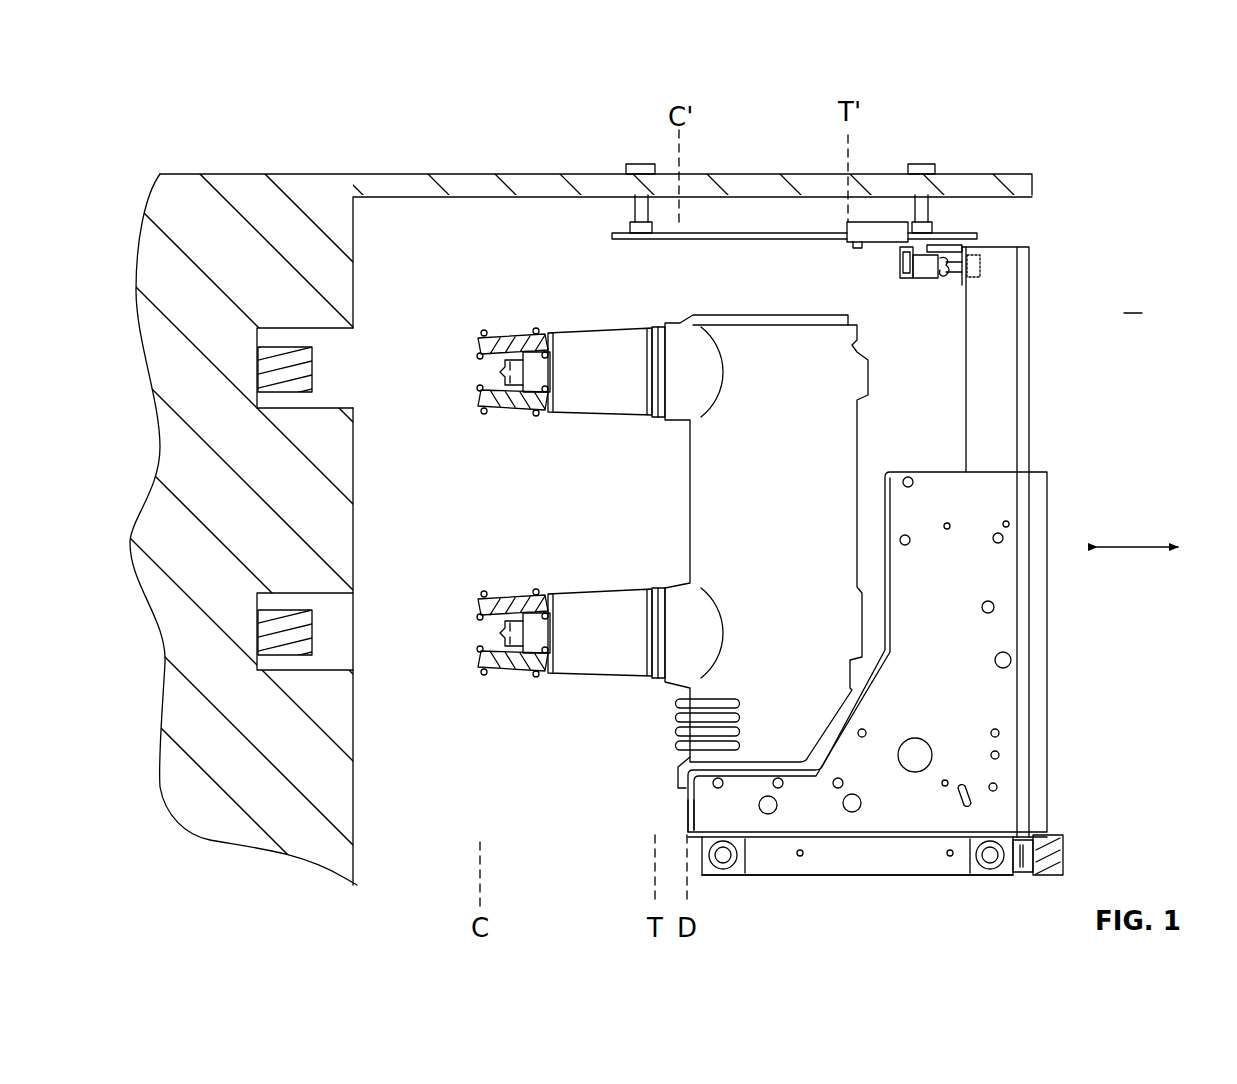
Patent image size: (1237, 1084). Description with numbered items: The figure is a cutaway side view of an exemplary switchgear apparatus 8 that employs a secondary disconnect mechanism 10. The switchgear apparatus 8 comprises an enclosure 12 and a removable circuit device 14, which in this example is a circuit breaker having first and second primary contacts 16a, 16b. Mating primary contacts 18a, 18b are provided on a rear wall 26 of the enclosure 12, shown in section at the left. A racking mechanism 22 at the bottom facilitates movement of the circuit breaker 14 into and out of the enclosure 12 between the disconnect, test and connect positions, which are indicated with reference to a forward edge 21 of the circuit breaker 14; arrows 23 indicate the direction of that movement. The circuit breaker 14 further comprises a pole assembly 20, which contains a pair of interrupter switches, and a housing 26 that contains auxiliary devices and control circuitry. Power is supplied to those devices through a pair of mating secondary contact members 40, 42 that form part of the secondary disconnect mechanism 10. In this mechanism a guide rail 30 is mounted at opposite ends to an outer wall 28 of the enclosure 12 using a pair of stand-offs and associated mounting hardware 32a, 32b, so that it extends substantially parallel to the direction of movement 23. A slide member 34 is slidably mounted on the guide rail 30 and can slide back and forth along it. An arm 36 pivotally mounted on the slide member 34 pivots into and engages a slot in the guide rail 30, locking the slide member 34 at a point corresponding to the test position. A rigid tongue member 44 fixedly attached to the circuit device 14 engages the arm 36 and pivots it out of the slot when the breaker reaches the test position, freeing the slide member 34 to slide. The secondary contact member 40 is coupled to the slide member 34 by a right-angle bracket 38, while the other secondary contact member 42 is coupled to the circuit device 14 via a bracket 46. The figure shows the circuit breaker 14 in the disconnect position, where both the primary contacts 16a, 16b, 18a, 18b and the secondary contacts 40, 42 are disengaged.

The switchgear apparatus 8 is at (1133, 299).
The secondary disconnect mechanism 10 is at (838, 262).
The enclosure 12 is at (262, 190).
The removable circuit device 14 is at (1047, 740).
The first primary contact 16a is at (508, 340).
The second primary contact 16b is at (515, 598).
The mating primary contact 18a is at (345, 362).
The mating primary contact 18b is at (345, 648).
The pole assembly 20 is at (690, 492).
The forward edge 21 is at (688, 808).
The racking mechanism 22 is at (895, 880).
The arrows 23 is at (1120, 547).
The rear wall 26 is at (354, 524).
The outer wall 28 is at (490, 184).
The guide rail 30 is at (730, 242).
The stand-off and mounting hardware 32a is at (632, 212).
The stand-off and mounting hardware 32b is at (903, 210).
The slide member 34 is at (880, 243).
The arm 36 is at (903, 262).
The right-angle bracket 38 is at (922, 279).
The secondary contact member 40 is at (945, 280).
The secondary contact member 42 is at (960, 288).
The tongue member 44 is at (943, 247).
The bracket 46 is at (967, 278).